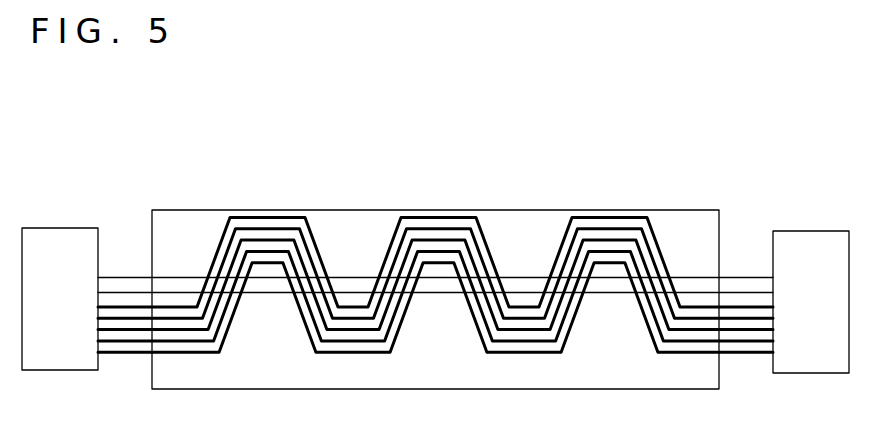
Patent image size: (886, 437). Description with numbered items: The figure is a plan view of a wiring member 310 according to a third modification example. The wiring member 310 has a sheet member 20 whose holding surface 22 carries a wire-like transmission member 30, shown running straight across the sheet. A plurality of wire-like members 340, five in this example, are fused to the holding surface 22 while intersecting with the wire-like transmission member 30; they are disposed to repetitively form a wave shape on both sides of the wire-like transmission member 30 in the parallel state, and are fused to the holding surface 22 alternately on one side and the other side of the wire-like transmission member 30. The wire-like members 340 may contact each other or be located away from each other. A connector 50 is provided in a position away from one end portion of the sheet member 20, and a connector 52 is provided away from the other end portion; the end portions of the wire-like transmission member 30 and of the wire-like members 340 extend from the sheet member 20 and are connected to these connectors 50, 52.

The sheet member 20 is at (247, 215).
The holding surface 22 is at (176, 229).
The wire-like transmission member 30 is at (523, 277).
The connector 50 is at (60, 228).
The connector 52 is at (812, 231).
The wiring member 310 is at (427, 166).
The wire-like member 340 is at (619, 261).